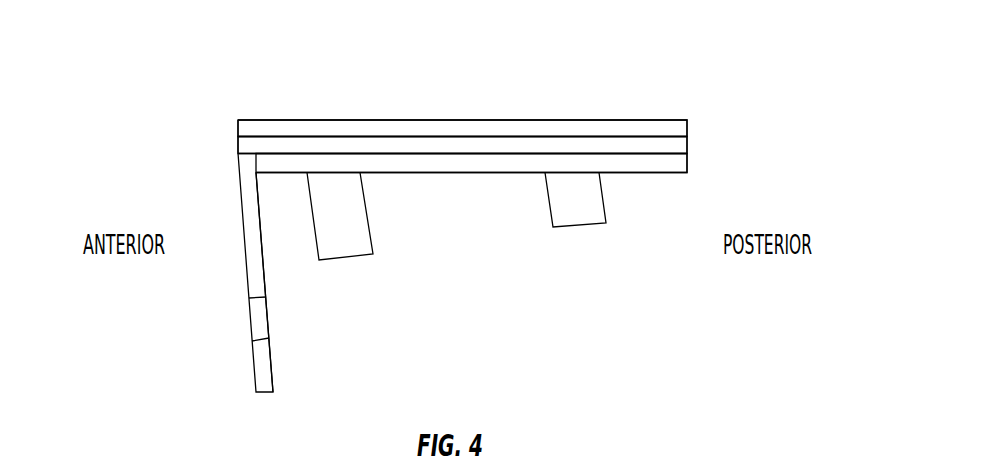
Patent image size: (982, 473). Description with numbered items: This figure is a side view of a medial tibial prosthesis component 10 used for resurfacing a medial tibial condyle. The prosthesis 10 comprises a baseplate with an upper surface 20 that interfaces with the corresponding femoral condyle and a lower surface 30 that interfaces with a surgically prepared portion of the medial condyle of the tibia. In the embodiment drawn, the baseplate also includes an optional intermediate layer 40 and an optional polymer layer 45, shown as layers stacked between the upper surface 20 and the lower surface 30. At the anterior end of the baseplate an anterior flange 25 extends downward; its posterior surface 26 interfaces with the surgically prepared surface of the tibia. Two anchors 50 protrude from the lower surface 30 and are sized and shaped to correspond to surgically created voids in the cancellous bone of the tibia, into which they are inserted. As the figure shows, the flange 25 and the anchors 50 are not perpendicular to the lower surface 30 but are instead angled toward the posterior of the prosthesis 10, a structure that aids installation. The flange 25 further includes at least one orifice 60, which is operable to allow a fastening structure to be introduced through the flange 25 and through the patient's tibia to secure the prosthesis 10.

The medial tibial prosthesis component 10 is at (475, 204).
The upper surface 20 is at (504, 153).
The anterior flange 25 is at (262, 272).
The posterior surface 26 is at (265, 265).
The lower surface 30 is at (504, 173).
The intermediate layer 40 is at (687, 128).
The polymer layer 45 is at (687, 145).
The anchors 50 is at (357, 252).
The orifice 60 is at (253, 338).